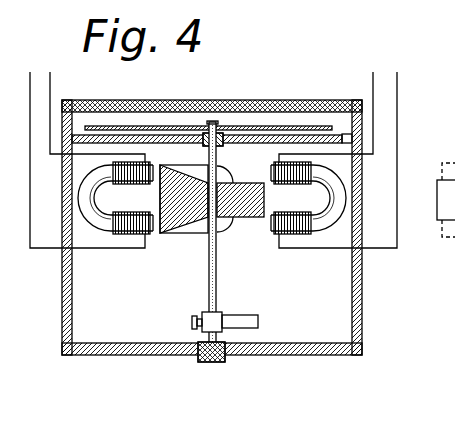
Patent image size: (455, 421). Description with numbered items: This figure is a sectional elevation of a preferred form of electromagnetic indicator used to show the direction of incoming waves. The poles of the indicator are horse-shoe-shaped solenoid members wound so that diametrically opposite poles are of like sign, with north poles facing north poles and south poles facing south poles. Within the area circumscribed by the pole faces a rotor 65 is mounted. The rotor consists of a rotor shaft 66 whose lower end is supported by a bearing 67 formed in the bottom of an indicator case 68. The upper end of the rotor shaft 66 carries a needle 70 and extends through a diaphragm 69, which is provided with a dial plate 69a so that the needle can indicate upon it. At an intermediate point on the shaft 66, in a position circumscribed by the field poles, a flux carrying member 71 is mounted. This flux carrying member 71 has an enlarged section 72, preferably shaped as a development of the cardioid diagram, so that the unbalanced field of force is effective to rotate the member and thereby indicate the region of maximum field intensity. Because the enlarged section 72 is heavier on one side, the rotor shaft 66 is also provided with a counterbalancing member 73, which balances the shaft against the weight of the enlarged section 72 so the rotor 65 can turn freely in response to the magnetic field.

The rotor 65 is at (232, 237).
The rotor shaft 66 is at (217, 288).
The bearing 67 is at (213, 362).
The indicator case 68 is at (362, 325).
The diaphragm 69 is at (338, 133).
The dial plate 69a is at (345, 132).
The needle 70 is at (265, 128).
The flux carrying member 71 is at (182, 243).
The enlarged section 72 is at (163, 240).
The counterbalancing member 73 is at (238, 320).